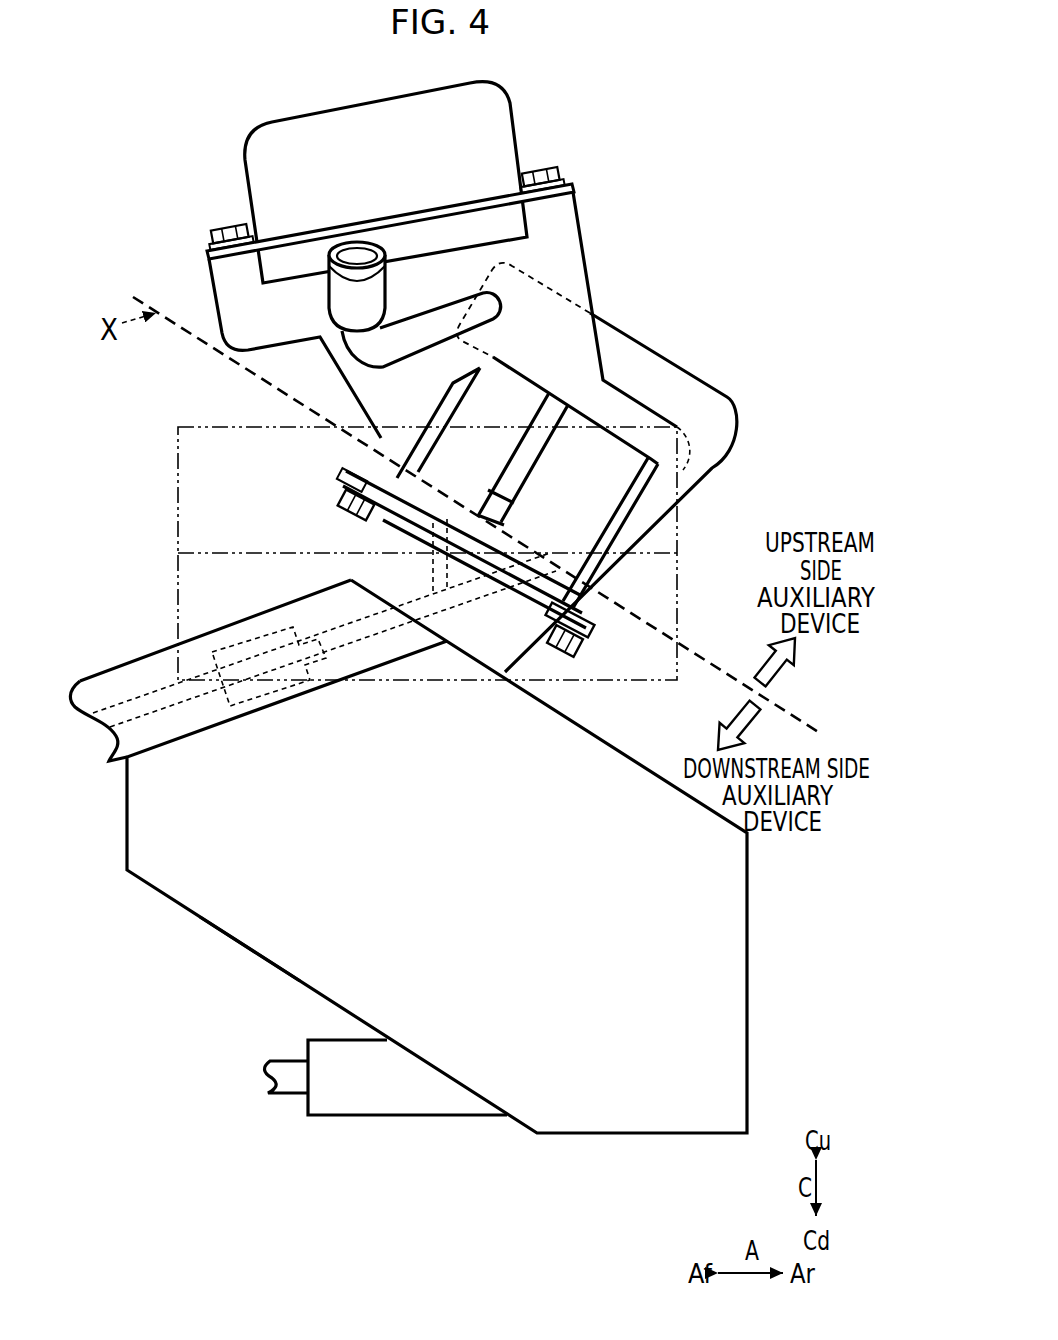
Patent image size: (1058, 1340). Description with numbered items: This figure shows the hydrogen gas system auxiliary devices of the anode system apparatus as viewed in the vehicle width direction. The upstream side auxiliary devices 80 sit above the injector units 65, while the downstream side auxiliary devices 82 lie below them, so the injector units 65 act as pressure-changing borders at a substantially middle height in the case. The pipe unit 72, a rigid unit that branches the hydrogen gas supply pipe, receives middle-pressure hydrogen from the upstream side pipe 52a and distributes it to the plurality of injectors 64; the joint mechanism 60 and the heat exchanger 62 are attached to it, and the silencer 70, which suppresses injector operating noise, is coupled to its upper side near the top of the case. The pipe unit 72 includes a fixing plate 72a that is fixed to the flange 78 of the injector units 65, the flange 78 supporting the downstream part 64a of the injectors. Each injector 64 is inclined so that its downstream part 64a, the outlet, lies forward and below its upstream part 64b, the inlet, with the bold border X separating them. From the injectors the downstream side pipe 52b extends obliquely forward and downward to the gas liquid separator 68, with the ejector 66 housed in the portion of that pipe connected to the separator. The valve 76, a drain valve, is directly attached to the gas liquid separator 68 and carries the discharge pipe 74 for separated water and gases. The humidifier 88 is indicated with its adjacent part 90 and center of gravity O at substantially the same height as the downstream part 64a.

The silencer 70 is at (493, 96).
The upstream side auxiliary devices 80 is at (686, 222).
The pipe unit 72 is at (582, 238).
The fixing plate 72a is at (600, 642).
The joint mechanism 60 is at (336, 302).
The upstream side pipe 52a is at (400, 337).
The downstream side pipe 52b is at (352, 649).
The heat exchanger 62 is at (637, 340).
The injector unit 65 is at (606, 417).
The injector 64 is at (468, 447).
The downstream part 64a is at (427, 493).
The upstream part 64b is at (450, 450).
The ejector 66 is at (243, 643).
The gas liquid separator 68 is at (247, 930).
The discharge pipe 74 is at (290, 1067).
The valve 76 is at (418, 1107).
The flange 78 is at (592, 626).
The downstream side auxiliary devices 82 is at (136, 636).
The humidifier 88 is at (203, 423).
The adjacent part 90 is at (200, 553).